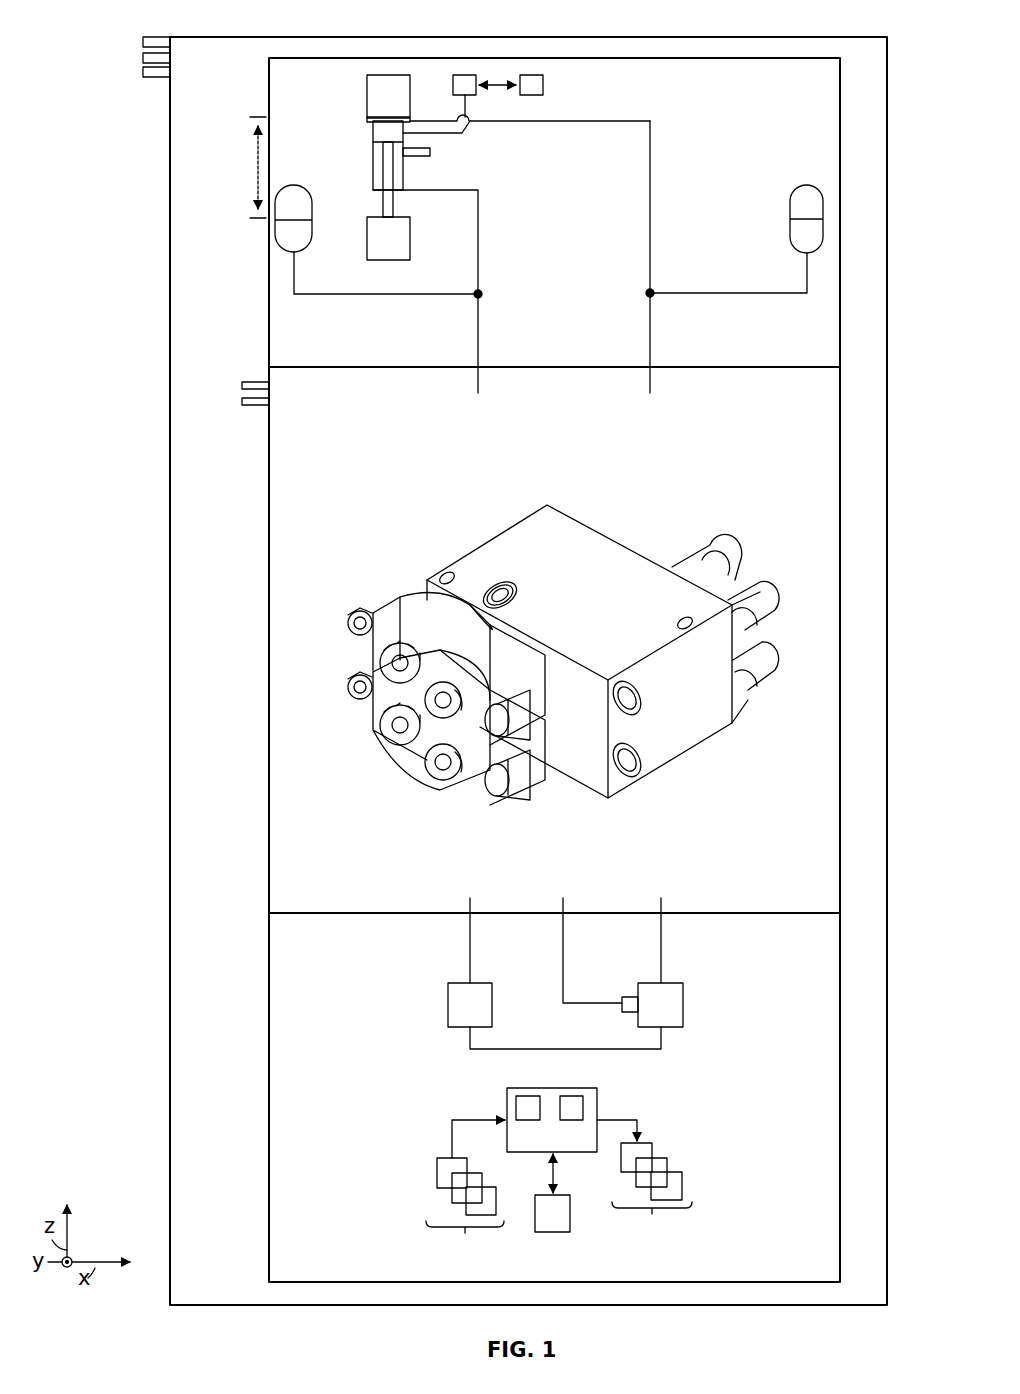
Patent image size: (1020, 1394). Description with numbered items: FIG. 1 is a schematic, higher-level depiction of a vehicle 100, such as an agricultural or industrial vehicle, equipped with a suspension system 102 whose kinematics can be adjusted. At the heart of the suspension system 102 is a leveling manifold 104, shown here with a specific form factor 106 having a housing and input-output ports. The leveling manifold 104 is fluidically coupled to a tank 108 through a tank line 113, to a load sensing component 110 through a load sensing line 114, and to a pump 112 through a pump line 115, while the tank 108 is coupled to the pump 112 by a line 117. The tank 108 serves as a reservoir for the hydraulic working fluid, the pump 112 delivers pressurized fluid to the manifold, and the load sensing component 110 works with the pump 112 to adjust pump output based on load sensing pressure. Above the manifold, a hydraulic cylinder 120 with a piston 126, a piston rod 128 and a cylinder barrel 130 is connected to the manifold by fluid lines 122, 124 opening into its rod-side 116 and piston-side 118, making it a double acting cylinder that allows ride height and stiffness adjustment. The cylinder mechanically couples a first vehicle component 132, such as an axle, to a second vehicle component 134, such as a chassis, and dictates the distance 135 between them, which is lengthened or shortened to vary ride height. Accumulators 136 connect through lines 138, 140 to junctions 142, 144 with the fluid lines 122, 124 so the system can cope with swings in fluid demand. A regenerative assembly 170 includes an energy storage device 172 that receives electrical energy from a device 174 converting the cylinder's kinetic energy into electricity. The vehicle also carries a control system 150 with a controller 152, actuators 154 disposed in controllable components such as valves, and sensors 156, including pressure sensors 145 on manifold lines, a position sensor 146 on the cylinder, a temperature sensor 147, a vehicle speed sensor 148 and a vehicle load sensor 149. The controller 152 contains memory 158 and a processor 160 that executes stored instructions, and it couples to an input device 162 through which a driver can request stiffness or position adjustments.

The vehicle 100 is at (176, 37).
The suspension system 102 is at (230, 90).
The leveling manifold 104 is at (286, 367).
The form factor 106 is at (428, 530).
The tank 108 is at (448, 1015).
The load sensing (LS) component 110 is at (628, 1012).
The pump 112 is at (700, 1010).
The tank line 113 is at (470, 966).
The load sensing line 114 is at (563, 966).
The pump line 115 is at (661, 966).
The rod-side 116 is at (376, 188).
The line 117 is at (548, 1049).
The piston-side 118 is at (367, 121).
The hydraulic cylinder 120 is at (465, 161).
The fluid line 122 is at (478, 352).
The fluid line 124 is at (650, 355).
The piston 126 is at (385, 135).
The piston rod 128 is at (385, 150).
The cylinder barrel 130 is at (403, 170).
The first vehicle component 132 is at (367, 252).
The second vehicle component 134 is at (367, 104).
The distance 135 is at (258, 172).
The accumulators 136 is at (294, 186).
The line 138 is at (374, 294).
The line 140 is at (690, 293).
The junction 142 is at (481, 291).
The junction 144 is at (652, 290).
The pressure sensors 145 is at (242, 401).
The position sensor 146 is at (430, 152).
The temperature sensor 147 is at (143, 42).
The vehicle speed sensor 148 is at (143, 58).
The vehicle load sensor 149 is at (143, 72).
The control system 150 is at (404, 1168).
The controller 152 is at (512, 1088).
The actuators 154 is at (644, 1181).
The sensors 156 is at (465, 1190).
The memory 158 is at (516, 1104).
The processor 160 is at (583, 1104).
The input device 162 is at (553, 1232).
The regenerative assembly 170 is at (526, 89).
The energy storage device 172 is at (531, 95).
The device 174 is at (453, 87).